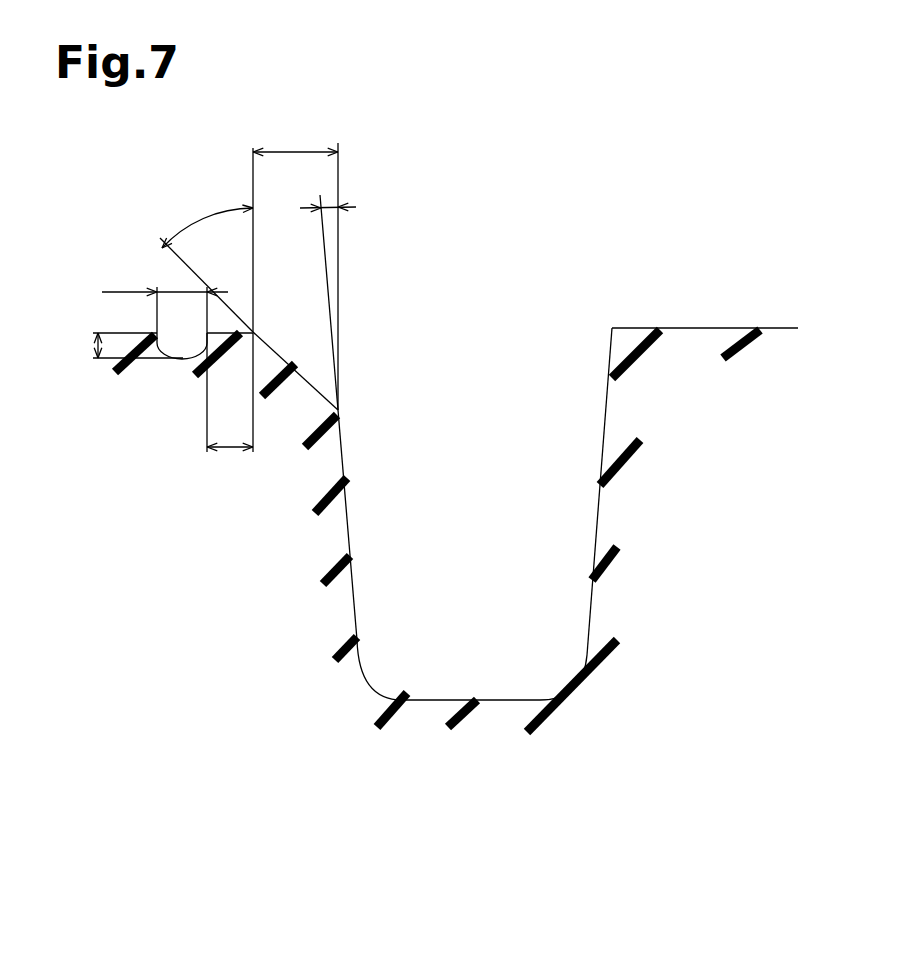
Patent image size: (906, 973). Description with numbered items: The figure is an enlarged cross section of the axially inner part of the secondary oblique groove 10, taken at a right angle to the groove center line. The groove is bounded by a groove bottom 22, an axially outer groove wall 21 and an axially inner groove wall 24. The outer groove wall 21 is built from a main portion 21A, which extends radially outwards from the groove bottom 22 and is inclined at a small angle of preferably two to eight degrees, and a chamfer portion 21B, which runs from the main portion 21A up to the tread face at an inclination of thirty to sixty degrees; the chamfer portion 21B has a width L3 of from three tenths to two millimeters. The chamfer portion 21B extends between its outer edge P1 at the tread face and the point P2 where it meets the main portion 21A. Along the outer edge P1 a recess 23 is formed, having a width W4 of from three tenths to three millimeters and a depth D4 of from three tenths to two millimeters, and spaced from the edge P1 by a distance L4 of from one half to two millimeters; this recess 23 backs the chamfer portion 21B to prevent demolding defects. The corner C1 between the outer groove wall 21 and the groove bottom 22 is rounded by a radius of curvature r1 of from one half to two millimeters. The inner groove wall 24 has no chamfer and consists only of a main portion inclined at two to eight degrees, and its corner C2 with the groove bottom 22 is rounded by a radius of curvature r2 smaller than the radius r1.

The secondary oblique groove 10 is at (505, 292).
The axially outer groove wall 21 is at (373, 480).
The main portion 21A is at (342, 447).
The chamfer portion 21B is at (287, 362).
The groove bottom 22 is at (460, 700).
The recess 23 is at (187, 355).
The axially inner groove wall 24 is at (605, 503).
The corner between outer groove wall and groove bottom C1 is at (378, 697).
The corner between inner groove wall and groove bottom C2 is at (568, 707).
The radius of curvature of corner C1 r1 is at (383, 680).
The radius of curvature of corner C2 r2 is at (568, 685).
The outer edge of chamfer portion P1 is at (258, 326).
The second point P2 is at (345, 407).
The normal line N is at (257, 237).
The width of chamfer portion L3 is at (295, 267).
The distance of recess from edge P1 L4 is at (230, 406).
The width of recess W4 is at (165, 304).
The depth of recess D4 is at (119, 349).